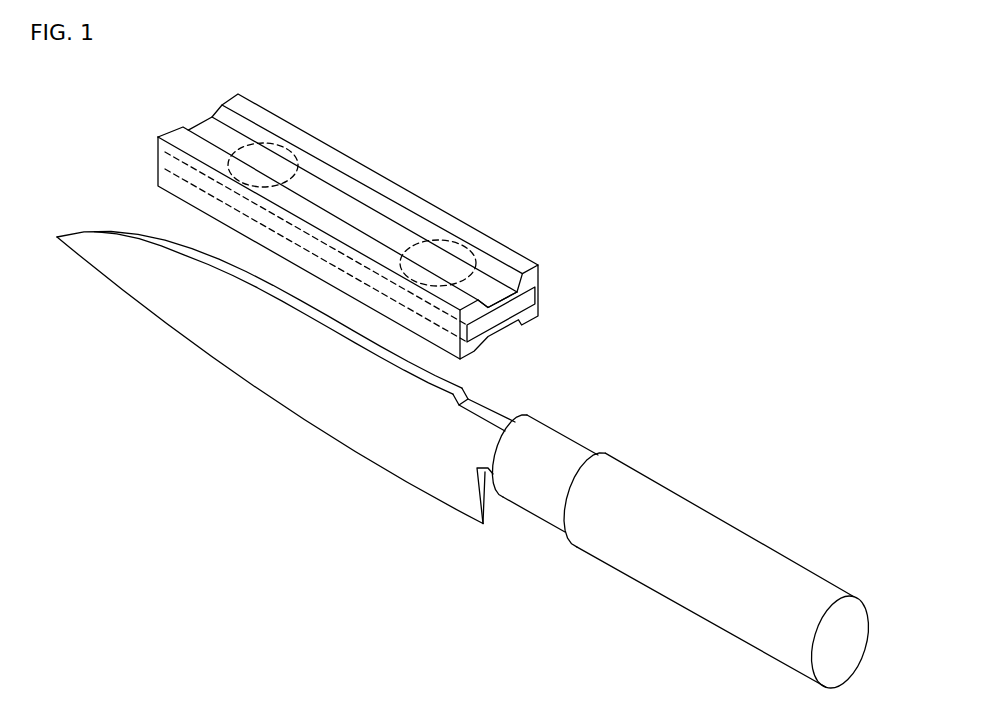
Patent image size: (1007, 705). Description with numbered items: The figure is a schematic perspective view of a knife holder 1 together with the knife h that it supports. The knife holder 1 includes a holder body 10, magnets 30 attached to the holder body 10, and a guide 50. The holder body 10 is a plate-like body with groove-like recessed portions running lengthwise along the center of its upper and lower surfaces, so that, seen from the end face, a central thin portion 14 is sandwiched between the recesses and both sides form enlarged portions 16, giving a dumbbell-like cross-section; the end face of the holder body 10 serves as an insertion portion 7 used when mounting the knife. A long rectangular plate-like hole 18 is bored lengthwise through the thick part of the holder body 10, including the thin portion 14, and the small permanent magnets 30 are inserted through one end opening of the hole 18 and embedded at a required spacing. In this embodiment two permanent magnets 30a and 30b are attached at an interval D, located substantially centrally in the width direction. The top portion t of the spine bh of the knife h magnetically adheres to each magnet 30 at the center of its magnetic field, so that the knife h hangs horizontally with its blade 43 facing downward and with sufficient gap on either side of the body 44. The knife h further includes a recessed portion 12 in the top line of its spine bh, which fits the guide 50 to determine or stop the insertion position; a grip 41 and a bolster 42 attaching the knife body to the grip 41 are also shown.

The knife holder 1 is at (427, 112).
The insertion portion 7 is at (371, 221).
The holder body 10 is at (195, 191).
The recessed portion 12 is at (463, 413).
The thin portion 14 is at (398, 242).
The enlarged portion 16 is at (240, 92).
The hole 18 is at (543, 298).
The magnet 30 is at (445, 169).
The first permanent magnet 30a is at (493, 275).
The second permanent magnet 30b is at (273, 145).
The grip 41 is at (657, 478).
The bolster 42 is at (567, 433).
The blade 43 is at (275, 401).
The body 44 is at (435, 472).
The guide 50 is at (500, 252).
The interval D is at (417, 178).
The top portion t is at (323, 307).
The spine bh is at (347, 440).
The knife h is at (468, 463).